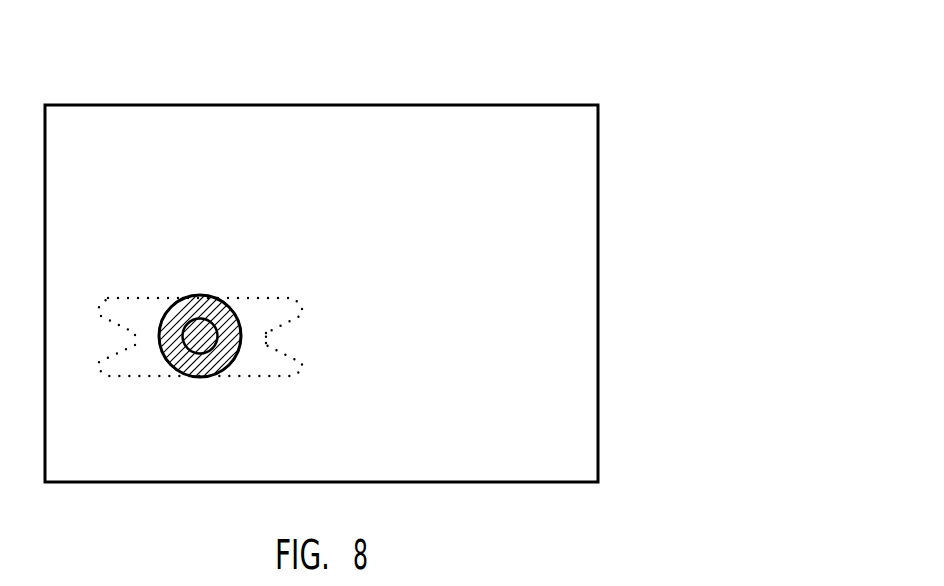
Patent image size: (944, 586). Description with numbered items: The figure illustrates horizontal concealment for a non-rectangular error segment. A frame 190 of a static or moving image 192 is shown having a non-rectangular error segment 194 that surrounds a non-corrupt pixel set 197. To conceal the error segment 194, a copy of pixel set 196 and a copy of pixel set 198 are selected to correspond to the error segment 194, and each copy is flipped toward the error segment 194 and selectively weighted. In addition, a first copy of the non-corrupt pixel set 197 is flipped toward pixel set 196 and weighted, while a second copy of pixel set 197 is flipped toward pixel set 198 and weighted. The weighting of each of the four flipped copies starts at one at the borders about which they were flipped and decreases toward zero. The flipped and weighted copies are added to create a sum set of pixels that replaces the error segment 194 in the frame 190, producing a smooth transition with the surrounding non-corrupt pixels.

The frame 190 is at (558, 90).
The image 192 is at (458, 276).
The non-rectangular error segment 194 is at (178, 311).
The pixel set 196 is at (148, 363).
The non-corrupt pixel set 197 is at (200, 340).
The pixel set 198 is at (266, 360).